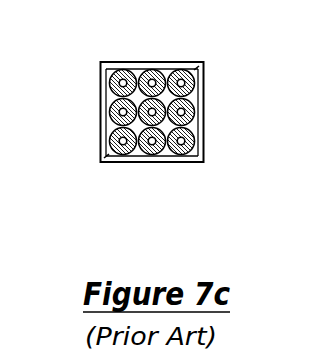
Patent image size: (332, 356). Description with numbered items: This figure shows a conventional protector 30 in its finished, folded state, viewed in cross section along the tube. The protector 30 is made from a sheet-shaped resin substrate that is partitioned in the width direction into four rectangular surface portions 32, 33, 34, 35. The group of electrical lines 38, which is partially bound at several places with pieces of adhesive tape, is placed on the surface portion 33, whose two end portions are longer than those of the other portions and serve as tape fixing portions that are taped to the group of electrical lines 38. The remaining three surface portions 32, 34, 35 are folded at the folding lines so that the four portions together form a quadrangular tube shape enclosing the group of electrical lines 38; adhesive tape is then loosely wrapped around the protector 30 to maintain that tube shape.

The protector 30 is at (153, 131).
The surface portion 32 is at (103, 85).
The surface portion 33 is at (145, 163).
The surface portion 34 is at (205, 87).
The surface portion 35 is at (151, 60).
The group of electrical lines 38 is at (182, 143).